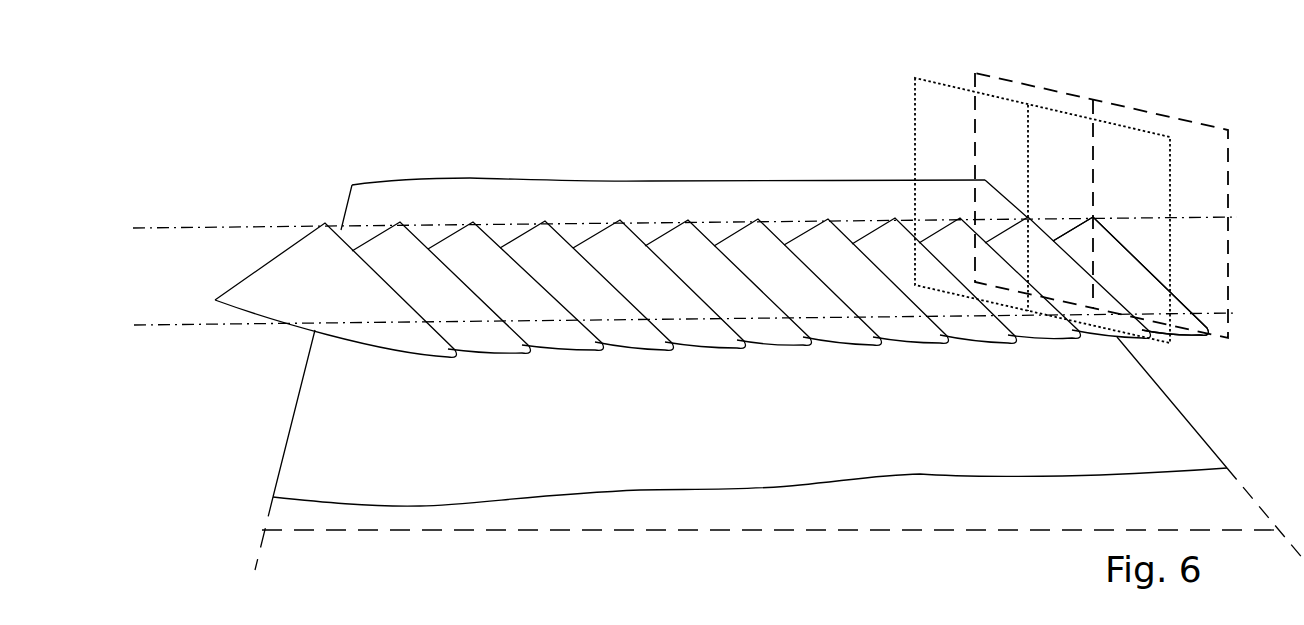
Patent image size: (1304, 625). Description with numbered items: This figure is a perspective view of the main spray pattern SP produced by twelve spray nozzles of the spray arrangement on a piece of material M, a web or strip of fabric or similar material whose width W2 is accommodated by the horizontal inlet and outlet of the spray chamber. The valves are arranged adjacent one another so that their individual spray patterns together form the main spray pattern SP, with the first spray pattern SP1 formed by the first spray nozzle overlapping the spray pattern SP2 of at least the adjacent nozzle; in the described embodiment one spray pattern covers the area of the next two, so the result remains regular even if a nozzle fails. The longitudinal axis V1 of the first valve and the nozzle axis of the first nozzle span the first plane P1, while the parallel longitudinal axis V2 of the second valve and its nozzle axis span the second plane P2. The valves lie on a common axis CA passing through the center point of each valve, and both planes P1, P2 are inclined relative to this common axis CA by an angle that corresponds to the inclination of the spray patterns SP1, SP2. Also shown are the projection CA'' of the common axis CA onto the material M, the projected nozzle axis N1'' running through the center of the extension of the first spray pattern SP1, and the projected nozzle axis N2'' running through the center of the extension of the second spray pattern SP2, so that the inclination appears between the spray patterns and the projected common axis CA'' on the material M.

The material M is at (895, 426).
The main spray pattern SP is at (690, 206).
The first spray pattern SP1 is at (1183, 337).
The second spray pattern SP2 is at (1060, 343).
The common axis CA is at (685, 171).
The projection of the common axis CA'' is at (685, 358).
The first plane P1 is at (1230, 193).
The second plane P2 is at (943, 80).
The longitudinal axis of the first valve V1 is at (1100, 145).
The longitudinal axis of the second valve V2 is at (1026, 197).
The projection of the first nozzle axis N1'' is at (1138, 276).
The projection of the second nozzle axis N2'' is at (934, 264).
The width of the web W2 is at (770, 550).